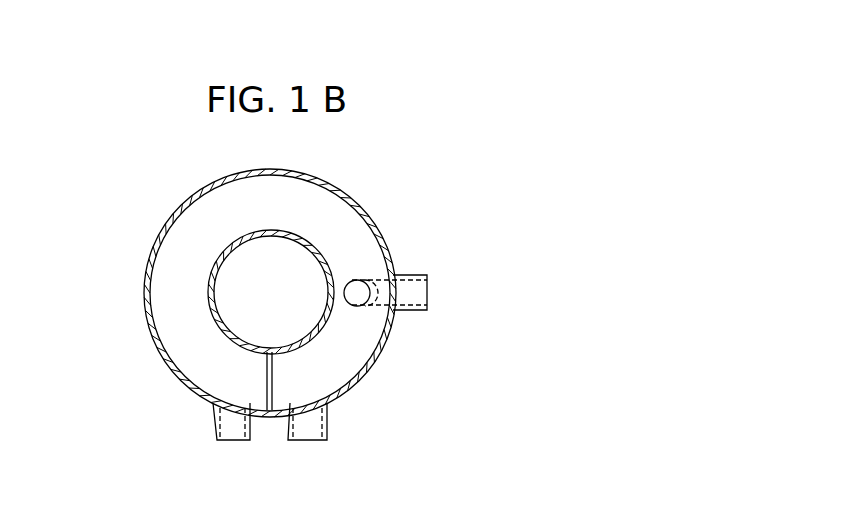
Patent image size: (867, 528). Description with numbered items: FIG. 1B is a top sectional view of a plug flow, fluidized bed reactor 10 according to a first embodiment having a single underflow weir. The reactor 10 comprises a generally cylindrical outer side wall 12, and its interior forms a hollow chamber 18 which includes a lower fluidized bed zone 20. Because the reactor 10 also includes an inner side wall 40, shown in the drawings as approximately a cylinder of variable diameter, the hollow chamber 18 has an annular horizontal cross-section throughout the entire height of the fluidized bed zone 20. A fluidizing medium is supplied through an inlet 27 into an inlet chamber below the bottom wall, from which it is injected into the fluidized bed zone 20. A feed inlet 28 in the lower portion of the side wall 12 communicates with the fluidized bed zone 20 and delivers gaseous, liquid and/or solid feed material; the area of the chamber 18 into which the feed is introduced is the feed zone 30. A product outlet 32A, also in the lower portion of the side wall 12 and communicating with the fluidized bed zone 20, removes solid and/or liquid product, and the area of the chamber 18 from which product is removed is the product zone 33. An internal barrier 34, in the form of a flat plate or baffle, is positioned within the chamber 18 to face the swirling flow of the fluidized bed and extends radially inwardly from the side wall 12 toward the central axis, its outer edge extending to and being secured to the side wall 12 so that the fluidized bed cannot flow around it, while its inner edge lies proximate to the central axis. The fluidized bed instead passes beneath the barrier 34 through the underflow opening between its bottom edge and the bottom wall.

The reactor 10 is at (422, 195).
The outer side wall 12 is at (387, 237).
The hollow chamber 18 is at (187, 267).
The fluidized bed zone 20 is at (211, 213).
The inlet 27 is at (428, 293).
The feed inlet 28 is at (327, 432).
The feed zone 30 is at (302, 380).
The product outlet 32A is at (212, 438).
The product zone 33 is at (220, 381).
The internal barrier 34 is at (275, 382).
The inner side wall 40 is at (305, 232).